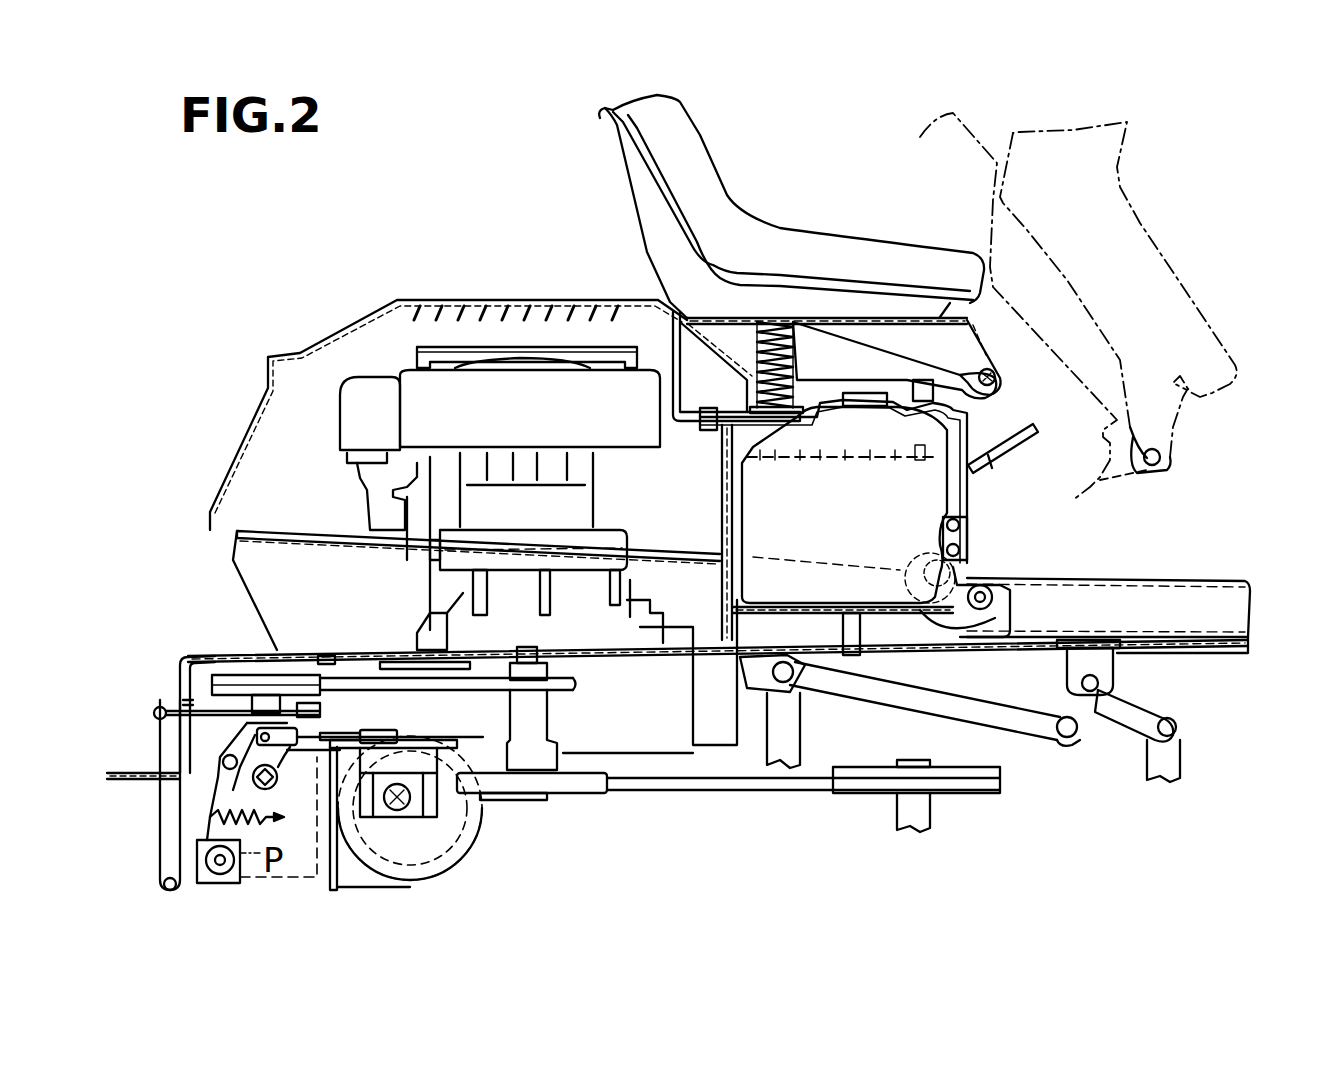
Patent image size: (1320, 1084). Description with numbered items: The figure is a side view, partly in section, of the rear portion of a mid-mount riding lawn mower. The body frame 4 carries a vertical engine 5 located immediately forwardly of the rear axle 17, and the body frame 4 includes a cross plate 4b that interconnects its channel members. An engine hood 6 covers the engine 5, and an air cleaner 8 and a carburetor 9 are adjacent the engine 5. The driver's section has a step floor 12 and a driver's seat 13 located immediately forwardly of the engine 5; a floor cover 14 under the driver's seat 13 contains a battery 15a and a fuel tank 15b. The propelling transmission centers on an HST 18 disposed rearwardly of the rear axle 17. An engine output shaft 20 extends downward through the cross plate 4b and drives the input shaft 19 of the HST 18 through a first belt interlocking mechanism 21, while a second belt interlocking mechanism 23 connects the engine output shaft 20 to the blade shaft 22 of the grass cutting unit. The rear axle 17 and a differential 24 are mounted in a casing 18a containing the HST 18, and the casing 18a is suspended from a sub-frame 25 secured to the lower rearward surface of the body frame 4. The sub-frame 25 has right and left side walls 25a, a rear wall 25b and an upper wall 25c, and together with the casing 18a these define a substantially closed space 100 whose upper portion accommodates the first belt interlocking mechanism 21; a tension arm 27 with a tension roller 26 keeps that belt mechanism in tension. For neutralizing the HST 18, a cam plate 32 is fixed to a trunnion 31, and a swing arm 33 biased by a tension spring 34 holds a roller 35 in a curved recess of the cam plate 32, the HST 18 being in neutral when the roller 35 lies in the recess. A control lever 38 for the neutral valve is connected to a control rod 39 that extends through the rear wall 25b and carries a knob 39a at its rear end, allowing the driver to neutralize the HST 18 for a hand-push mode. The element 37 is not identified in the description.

The body frame 4 is at (237, 553).
The cross plate 4b is at (300, 655).
The vertical engine 5 is at (407, 463).
The engine hood 6 is at (385, 300).
The air cleaner 8 is at (343, 412).
The carburetor 9 is at (405, 557).
The step floor 12 is at (1228, 578).
The driver's seat 13 is at (835, 243).
The floor cover 14 is at (973, 440).
The battery 15a is at (838, 440).
The fuel tank 15b is at (748, 505).
The rear axle 17 is at (410, 797).
The HST (hydrostatic stepless transmission) 18 is at (450, 870).
The casing 18a is at (205, 775).
The input shaft 19 is at (267, 700).
The engine output shaft 20 is at (527, 650).
The first belt interlocking mechanism 21 is at (597, 684).
The blade shaft 22 is at (920, 813).
The second belt interlocking mechanism 23 is at (1015, 783).
The differential 24 is at (500, 870).
The sub-frame 25 is at (213, 650).
The side walls 25a is at (722, 745).
The rear wall 25b is at (178, 657).
The upper wall 25c is at (650, 679).
The tension roller 26 is at (337, 648).
The tension arm 27 is at (415, 653).
The trunnion 31 is at (272, 792).
The cam plate 32 is at (277, 787).
The swing arm 33 is at (250, 780).
The tension spring 34 is at (212, 836).
The roller 35 is at (154, 713).
The hanger 37 is at (483, 720).
The control lever 38 is at (297, 733).
The control rod 39 is at (197, 655).
The knob 39a is at (183, 700).
The closed space 100 is at (628, 735).